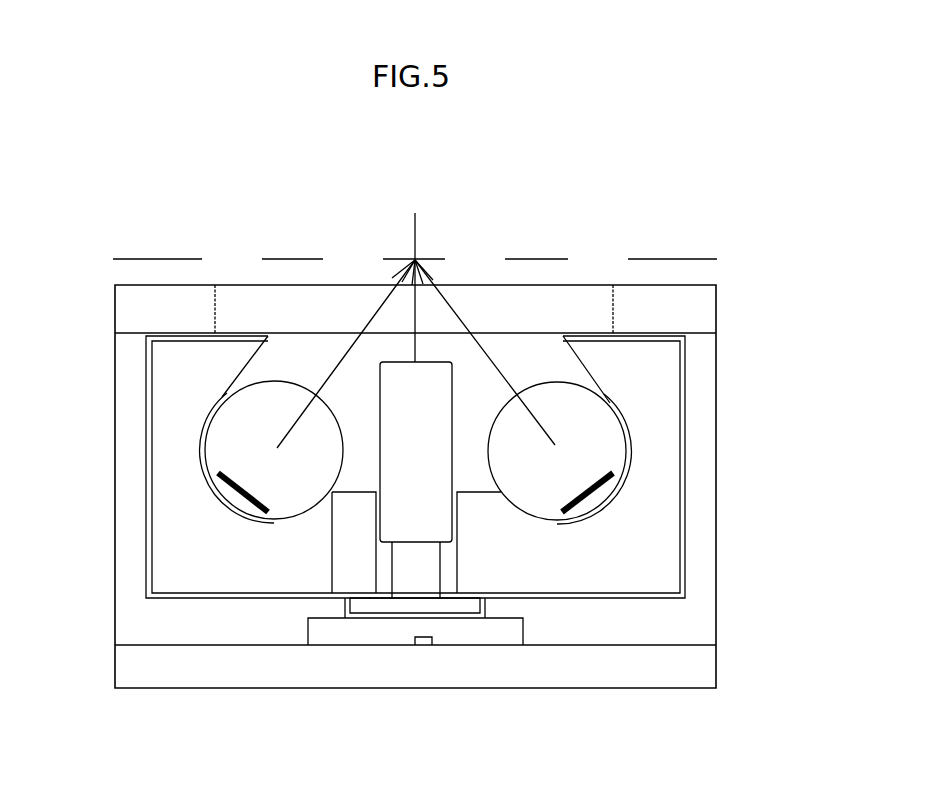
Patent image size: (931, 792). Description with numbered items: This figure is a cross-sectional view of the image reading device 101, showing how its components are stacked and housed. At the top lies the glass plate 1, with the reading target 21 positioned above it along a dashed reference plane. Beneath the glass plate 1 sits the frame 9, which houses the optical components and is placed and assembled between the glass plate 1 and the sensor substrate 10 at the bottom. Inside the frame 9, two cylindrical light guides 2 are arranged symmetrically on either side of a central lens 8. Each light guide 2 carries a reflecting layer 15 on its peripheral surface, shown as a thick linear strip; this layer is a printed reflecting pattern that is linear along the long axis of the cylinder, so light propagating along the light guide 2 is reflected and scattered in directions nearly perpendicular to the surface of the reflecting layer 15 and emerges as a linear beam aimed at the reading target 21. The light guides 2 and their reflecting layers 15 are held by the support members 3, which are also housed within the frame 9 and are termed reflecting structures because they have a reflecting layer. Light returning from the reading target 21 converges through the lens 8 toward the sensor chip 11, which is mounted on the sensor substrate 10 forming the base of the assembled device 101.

The image reading device 101 is at (182, 155).
The glass plate 1 is at (587, 310).
The light guide 2 is at (265, 428).
The support member 3 is at (663, 478).
The lens 8 is at (415, 403).
The frame 9 is at (130, 563).
The sensor substrate 10 is at (672, 672).
The sensor chip 11 is at (430, 641).
The reflecting layer 15 is at (240, 483).
The reading target 21 is at (437, 257).